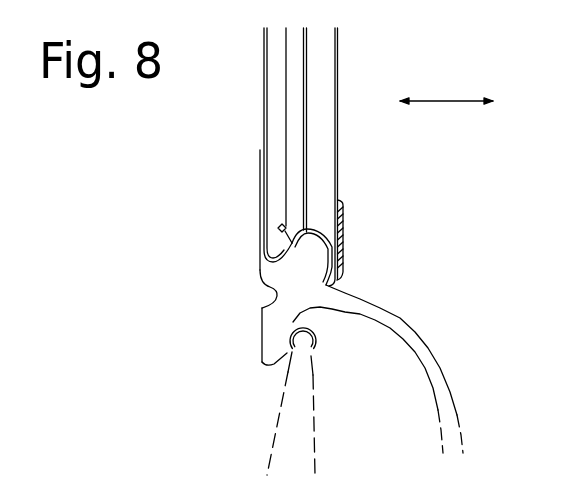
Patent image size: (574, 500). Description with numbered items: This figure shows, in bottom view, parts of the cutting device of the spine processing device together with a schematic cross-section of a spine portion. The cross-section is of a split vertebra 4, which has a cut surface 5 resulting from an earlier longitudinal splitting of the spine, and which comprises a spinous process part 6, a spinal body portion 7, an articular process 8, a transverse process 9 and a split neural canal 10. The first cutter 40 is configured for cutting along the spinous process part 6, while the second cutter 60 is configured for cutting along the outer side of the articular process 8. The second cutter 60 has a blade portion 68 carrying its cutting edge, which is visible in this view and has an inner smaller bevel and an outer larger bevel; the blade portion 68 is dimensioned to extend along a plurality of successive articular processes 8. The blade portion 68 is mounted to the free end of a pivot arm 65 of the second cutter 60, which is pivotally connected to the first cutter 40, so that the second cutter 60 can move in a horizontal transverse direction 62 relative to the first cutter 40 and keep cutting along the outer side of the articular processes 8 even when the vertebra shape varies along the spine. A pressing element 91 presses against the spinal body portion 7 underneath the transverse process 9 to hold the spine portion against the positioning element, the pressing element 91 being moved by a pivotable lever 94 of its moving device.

The split vertebra 4 is at (266, 378).
The cut surface 5 is at (256, 331).
The spinous process part 6 is at (262, 159).
The spinal body portion 7 is at (273, 343).
The articular process 8 is at (308, 257).
The transverse process 9 is at (390, 316).
The split neural canal 10 is at (267, 289).
The first cutter 40 is at (266, 200).
The second cutter 60 is at (402, 178).
The transverse direction 62 is at (447, 101).
The pivot arm 65 is at (322, 140).
The blade portion 68 is at (341, 256).
The pressing element 91 is at (323, 350).
The lever 94 is at (290, 393).